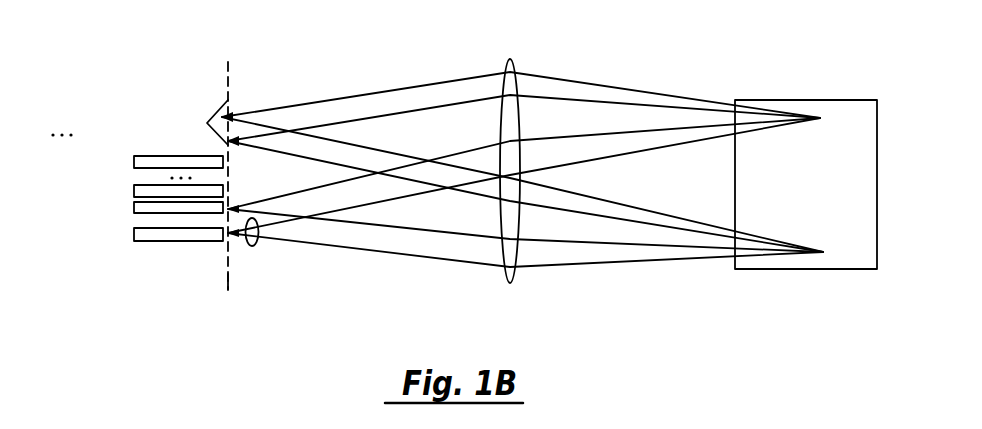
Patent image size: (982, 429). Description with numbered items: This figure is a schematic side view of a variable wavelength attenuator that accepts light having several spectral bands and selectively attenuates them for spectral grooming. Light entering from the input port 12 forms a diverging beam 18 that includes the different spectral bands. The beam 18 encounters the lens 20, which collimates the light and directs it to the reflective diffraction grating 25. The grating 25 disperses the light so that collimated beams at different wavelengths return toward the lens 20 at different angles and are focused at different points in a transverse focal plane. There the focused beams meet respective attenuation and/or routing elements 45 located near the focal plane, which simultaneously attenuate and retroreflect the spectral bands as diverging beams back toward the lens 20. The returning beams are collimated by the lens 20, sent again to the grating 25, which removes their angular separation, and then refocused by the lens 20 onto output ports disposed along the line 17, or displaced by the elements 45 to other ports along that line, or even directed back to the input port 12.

The input port 12 is at (233, 242).
The line 17 is at (228, 280).
The diverging beam 18 is at (256, 245).
The lens 20 is at (507, 279).
The reflective diffraction grating 25 is at (812, 100).
The attenuation and/or routing elements 45 is at (220, 114).